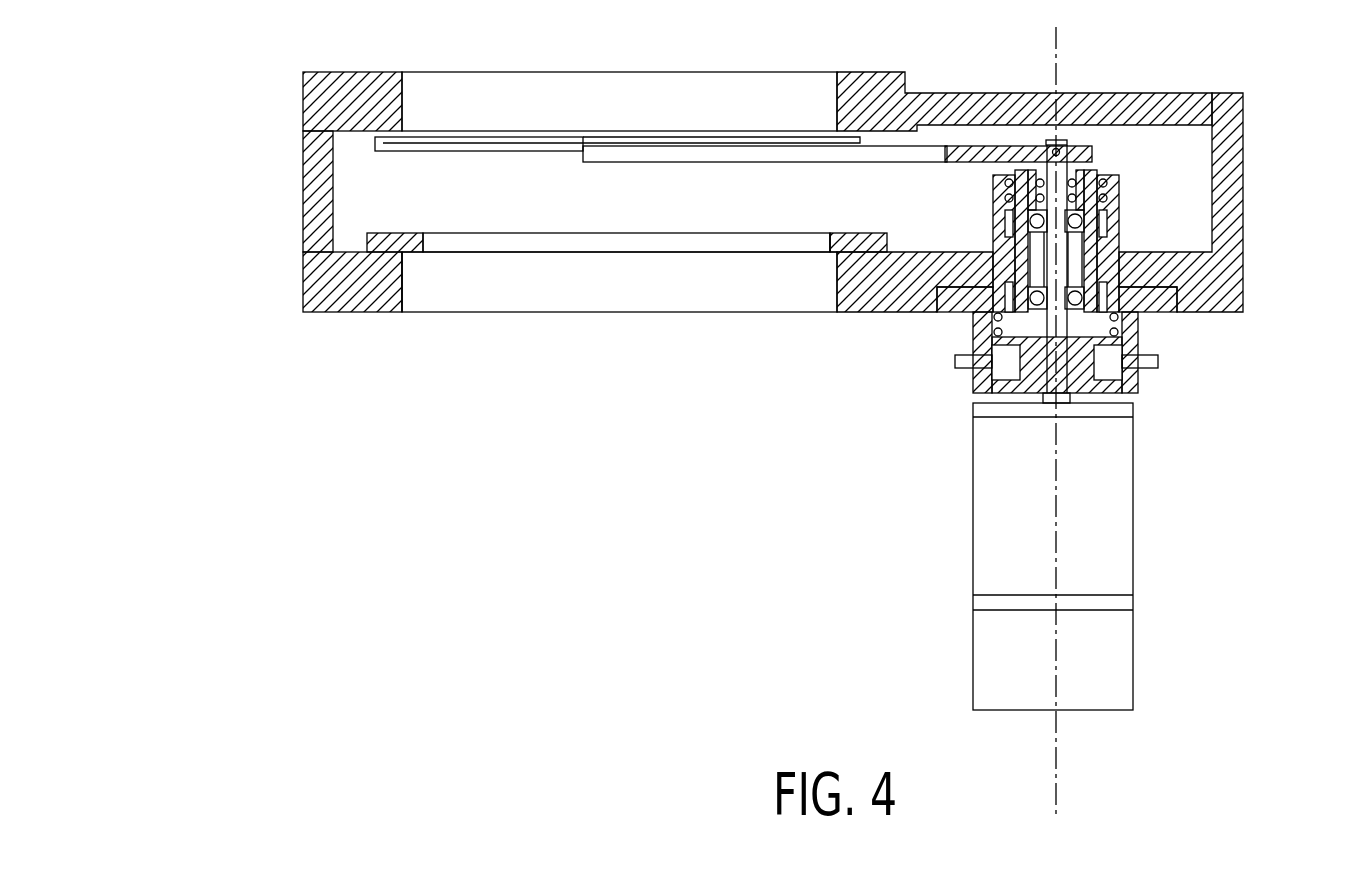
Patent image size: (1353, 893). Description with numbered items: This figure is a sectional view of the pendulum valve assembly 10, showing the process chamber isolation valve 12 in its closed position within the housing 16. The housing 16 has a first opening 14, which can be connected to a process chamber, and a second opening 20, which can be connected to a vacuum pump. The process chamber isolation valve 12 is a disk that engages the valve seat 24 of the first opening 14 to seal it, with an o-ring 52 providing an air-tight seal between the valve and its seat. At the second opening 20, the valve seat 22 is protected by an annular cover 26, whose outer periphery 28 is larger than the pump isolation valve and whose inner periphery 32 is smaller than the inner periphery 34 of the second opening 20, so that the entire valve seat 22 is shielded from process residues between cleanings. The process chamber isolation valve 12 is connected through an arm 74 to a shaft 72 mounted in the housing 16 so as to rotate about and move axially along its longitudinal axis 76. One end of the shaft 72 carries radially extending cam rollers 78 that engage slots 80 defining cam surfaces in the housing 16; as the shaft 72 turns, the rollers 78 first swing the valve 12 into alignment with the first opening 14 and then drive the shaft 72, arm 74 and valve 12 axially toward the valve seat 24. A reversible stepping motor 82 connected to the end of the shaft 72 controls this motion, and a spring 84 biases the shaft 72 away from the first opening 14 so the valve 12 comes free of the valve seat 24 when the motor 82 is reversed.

The valve assembly 10 is at (384, 483).
The process chamber isolation valve 12 is at (740, 146).
The first opening 14 is at (444, 72).
The housing 16 is at (1252, 156).
The second opening 20 is at (497, 312).
The valve seat 22 is at (377, 253).
The valve seat 24 is at (385, 145).
The annular cover 26 is at (575, 253).
The outer periphery 28 is at (882, 247).
The inner periphery 32 is at (827, 247).
The inner periphery 34 is at (400, 292).
The o-rings 52 is at (508, 137).
The shaft 72 is at (1060, 147).
The arm 74 is at (932, 150).
The longitudinal axis 76 is at (1056, 762).
The cam rollers 78 is at (970, 370).
The slots 80 is at (978, 352).
The motor 82 is at (1133, 527).
The spring 84 is at (1140, 316).